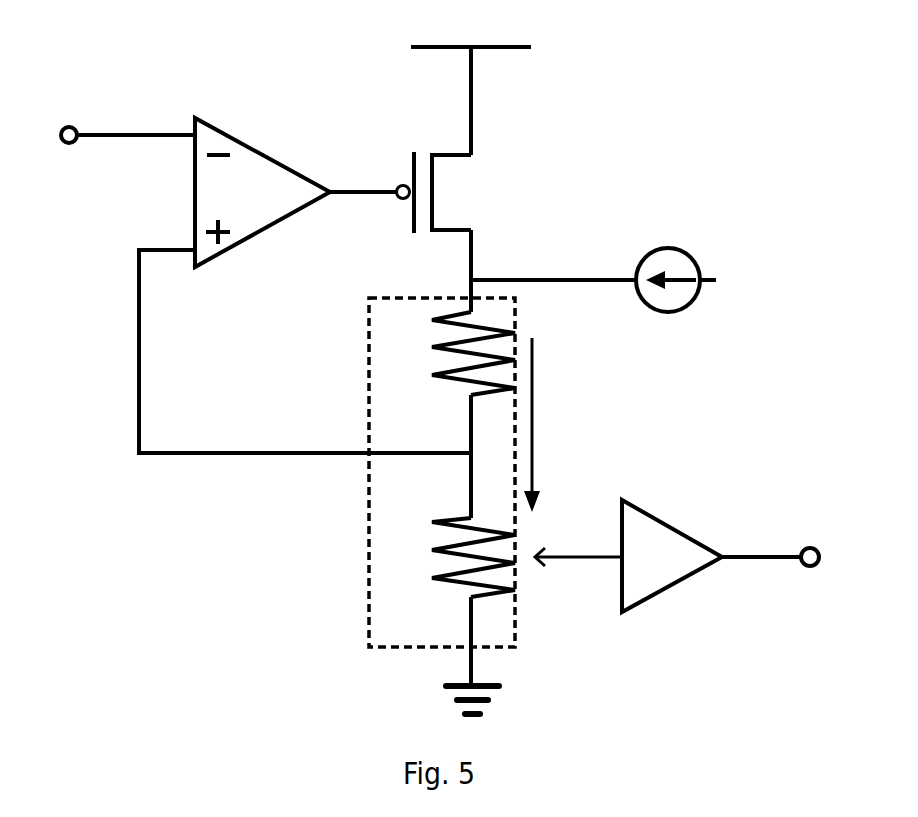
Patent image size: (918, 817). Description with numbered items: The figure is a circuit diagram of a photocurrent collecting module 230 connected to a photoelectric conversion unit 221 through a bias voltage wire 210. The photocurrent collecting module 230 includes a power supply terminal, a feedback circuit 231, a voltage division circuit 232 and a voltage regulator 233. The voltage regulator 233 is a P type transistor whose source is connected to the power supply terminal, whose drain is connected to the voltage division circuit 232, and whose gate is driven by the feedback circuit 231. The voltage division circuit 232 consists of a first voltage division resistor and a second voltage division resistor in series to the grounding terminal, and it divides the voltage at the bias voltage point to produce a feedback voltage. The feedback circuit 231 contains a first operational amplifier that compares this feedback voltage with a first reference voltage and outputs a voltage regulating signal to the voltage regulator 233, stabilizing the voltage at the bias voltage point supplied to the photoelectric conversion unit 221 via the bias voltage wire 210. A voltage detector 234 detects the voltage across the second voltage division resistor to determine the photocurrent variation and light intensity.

The photocurrent collecting module 230 is at (139, 532).
The feedback circuit 231 is at (218, 125).
The voltage regulator 233 is at (463, 190).
The bias voltage wire 210 is at (490, 277).
The photoelectric conversion unit 221 is at (691, 202).
The voltage division circuit 232 is at (369, 527).
The voltage detector 234 is at (657, 517).